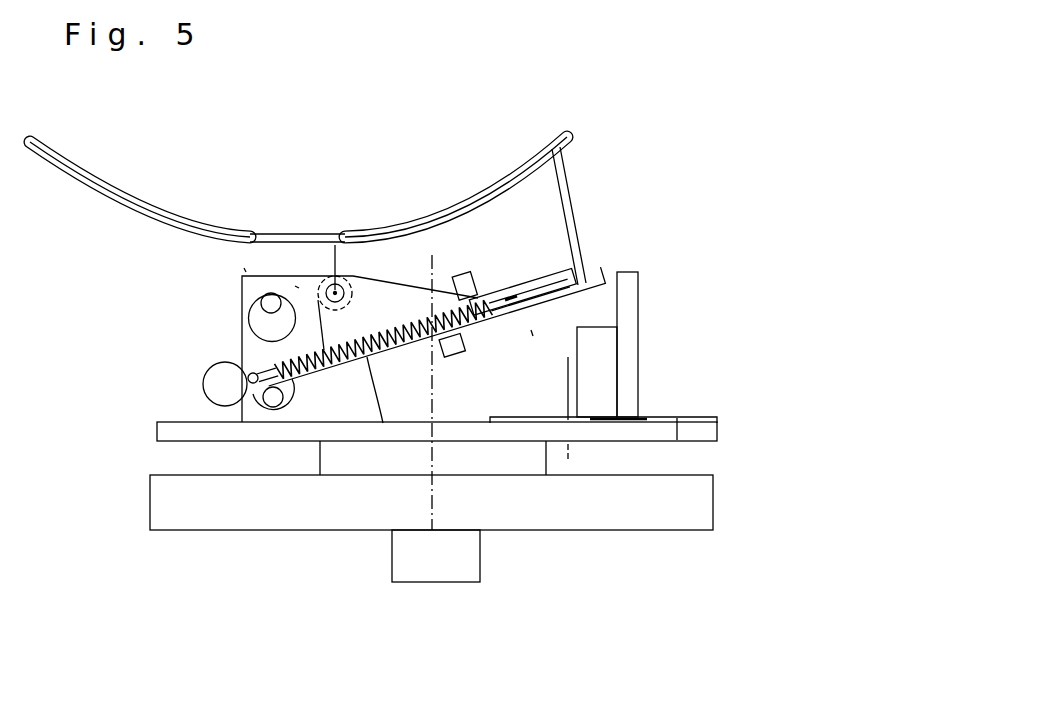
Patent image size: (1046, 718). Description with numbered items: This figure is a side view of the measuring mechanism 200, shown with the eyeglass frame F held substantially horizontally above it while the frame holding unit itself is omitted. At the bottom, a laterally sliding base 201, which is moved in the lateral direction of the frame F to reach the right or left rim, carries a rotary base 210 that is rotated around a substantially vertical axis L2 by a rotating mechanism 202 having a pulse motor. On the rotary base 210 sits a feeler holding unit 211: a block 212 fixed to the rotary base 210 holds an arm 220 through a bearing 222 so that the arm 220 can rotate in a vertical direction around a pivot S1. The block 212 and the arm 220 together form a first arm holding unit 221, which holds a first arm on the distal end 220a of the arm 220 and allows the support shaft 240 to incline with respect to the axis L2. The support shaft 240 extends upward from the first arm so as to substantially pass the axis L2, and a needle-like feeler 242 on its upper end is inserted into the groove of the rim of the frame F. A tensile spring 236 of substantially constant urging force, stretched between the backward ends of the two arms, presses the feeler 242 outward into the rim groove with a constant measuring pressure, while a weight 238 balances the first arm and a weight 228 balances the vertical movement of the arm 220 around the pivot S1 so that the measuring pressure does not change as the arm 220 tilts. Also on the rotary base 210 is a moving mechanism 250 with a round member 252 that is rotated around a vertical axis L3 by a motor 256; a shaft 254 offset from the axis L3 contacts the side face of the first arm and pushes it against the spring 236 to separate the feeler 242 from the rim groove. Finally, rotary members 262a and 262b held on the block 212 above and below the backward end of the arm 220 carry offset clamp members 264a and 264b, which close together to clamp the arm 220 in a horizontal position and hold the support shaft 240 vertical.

The frame F is at (62, 182).
The pivot S1 is at (338, 285).
The axis L2 is at (436, 262).
The axis L3 is at (570, 450).
The measuring mechanism 200 is at (704, 202).
The laterally sliding base 201 is at (665, 510).
The rotating mechanism 202 is at (465, 560).
The rotary base 210 is at (167, 432).
The feeler holding unit 211 is at (530, 327).
The block 212 is at (297, 287).
The arm 220 is at (393, 293).
The distal end 220a is at (520, 287).
The first arm holding unit 221 is at (246, 271).
The bearing 222 is at (335, 290).
The weight 228 is at (205, 384).
The spring 236 is at (485, 328).
The weight 238 is at (580, 268).
The support shaft 240 is at (562, 198).
The feeler 242 is at (546, 133).
The moving mechanism 250 is at (685, 376).
The round member 252 is at (647, 421).
The shaft 254 is at (625, 313).
The motor 256 is at (603, 358).
The rotary member 262a is at (257, 319).
The rotary member 262b is at (268, 366).
The clamp member 264a is at (271, 303).
The clamp member 264b is at (272, 395).